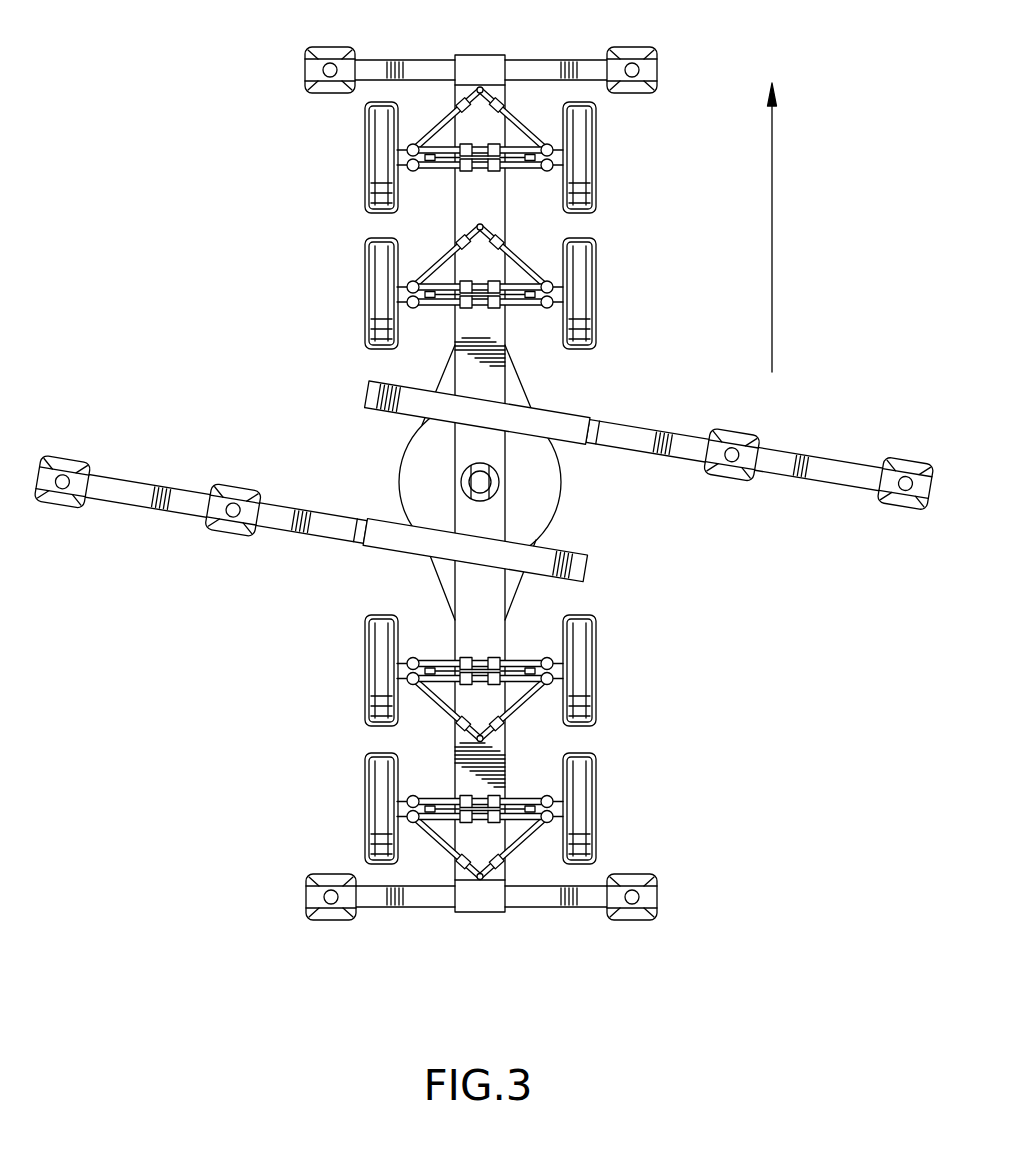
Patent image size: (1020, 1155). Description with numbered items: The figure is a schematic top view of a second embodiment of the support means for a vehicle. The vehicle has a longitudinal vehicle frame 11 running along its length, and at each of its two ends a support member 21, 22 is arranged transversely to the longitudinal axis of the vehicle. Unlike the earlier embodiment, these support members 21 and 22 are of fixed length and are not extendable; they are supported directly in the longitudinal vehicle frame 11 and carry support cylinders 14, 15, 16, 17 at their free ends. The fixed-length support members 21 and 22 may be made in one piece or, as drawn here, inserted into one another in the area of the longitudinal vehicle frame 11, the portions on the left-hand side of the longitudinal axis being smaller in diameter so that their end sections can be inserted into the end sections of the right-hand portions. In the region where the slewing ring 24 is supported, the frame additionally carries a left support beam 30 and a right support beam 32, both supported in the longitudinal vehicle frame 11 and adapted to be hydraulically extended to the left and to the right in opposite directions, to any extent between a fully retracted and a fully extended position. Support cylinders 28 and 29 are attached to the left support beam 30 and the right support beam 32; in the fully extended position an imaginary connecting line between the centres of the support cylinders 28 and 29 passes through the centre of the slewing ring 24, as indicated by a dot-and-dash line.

The longitudinal vehicle frame 11 is at (495, 325).
The support cylinder 14 is at (312, 903).
The support cylinder 15 is at (655, 898).
The support cylinder 16 is at (307, 76).
The support cylinder 17 is at (656, 63).
The support member 21 is at (523, 67).
The support member 22 is at (427, 897).
The slewing ring 24 is at (560, 478).
The support cylinder 28 is at (70, 462).
The support cylinder 29 is at (905, 505).
The left support beam 30 is at (330, 535).
The right support beam 32 is at (624, 430).